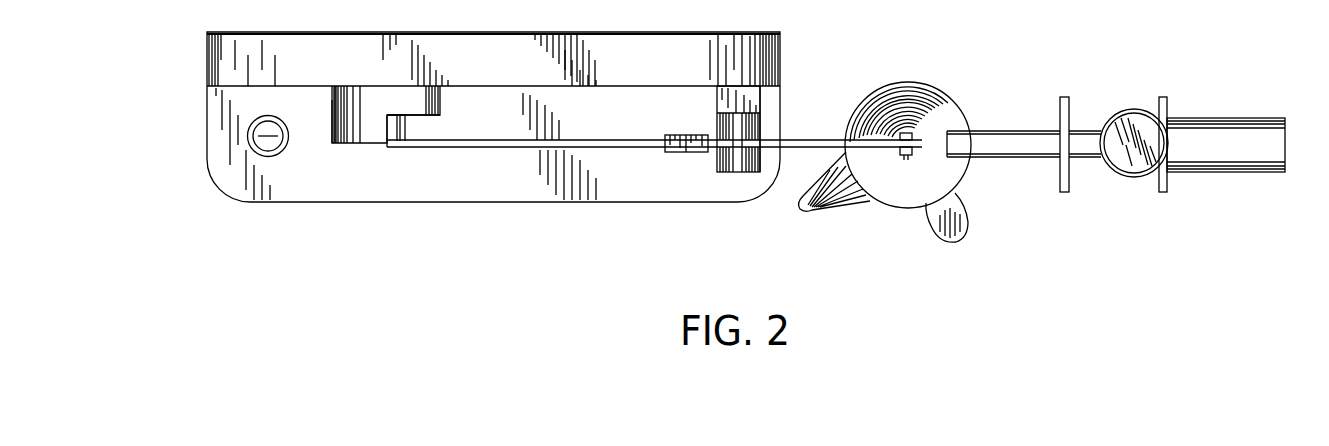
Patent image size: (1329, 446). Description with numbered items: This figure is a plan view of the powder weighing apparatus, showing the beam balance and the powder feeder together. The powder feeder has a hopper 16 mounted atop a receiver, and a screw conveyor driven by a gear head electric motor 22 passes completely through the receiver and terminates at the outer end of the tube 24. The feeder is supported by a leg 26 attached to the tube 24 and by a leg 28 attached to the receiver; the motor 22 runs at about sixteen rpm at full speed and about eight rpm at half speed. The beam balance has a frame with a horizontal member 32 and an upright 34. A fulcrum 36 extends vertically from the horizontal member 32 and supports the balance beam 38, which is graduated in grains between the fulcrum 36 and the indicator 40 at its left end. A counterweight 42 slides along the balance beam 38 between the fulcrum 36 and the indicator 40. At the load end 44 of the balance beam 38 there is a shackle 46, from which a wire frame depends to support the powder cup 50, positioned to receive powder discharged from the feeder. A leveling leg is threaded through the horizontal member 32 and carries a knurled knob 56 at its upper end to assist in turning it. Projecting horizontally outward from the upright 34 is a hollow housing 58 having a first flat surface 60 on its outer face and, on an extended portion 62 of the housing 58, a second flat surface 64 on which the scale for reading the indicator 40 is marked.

The hopper 16 is at (1131, 110).
The gear head electric motor 22 is at (1270, 118).
The tube 24 is at (1000, 158).
The leg 26 is at (1068, 186).
The leg 28 is at (1167, 186).
The horizontal member 32 is at (207, 118).
The upright 34 is at (337, 32).
The fulcrum 36 is at (745, 172).
The balance beam 38 is at (640, 141).
The indicator 40 is at (382, 146).
The counterweight 42 is at (697, 135).
The load end 44 is at (833, 120).
The shackle 46 is at (913, 154).
The powder cup 50 is at (908, 207).
The knurled knob 56 is at (272, 156).
The hollow housing 58 is at (386, 92).
The first flat surface 60 is at (417, 120).
The extended portion 62 is at (332, 130).
The second flat surface 64 is at (362, 143).